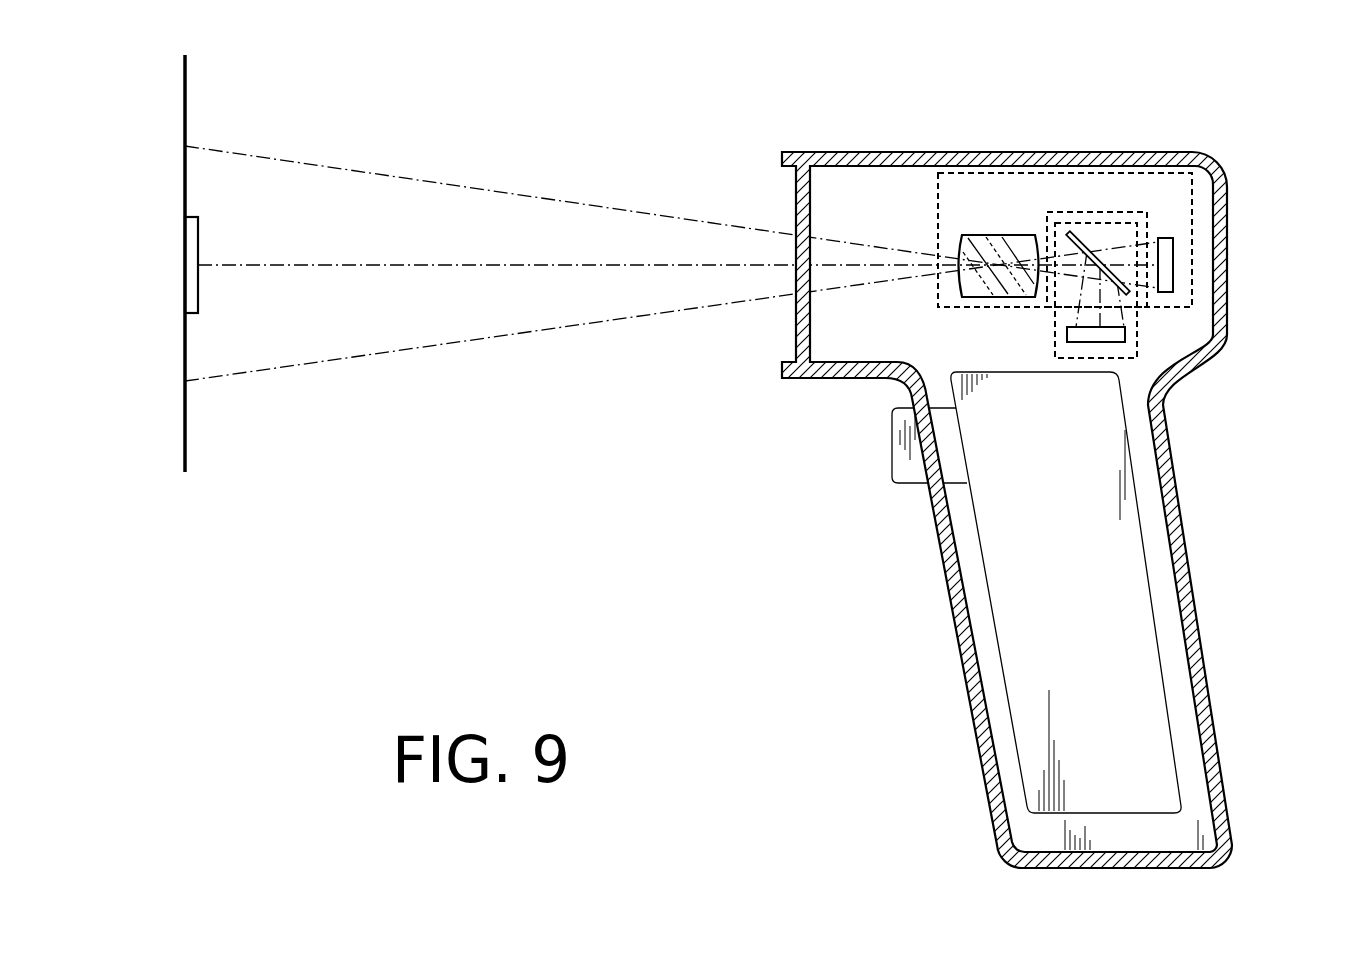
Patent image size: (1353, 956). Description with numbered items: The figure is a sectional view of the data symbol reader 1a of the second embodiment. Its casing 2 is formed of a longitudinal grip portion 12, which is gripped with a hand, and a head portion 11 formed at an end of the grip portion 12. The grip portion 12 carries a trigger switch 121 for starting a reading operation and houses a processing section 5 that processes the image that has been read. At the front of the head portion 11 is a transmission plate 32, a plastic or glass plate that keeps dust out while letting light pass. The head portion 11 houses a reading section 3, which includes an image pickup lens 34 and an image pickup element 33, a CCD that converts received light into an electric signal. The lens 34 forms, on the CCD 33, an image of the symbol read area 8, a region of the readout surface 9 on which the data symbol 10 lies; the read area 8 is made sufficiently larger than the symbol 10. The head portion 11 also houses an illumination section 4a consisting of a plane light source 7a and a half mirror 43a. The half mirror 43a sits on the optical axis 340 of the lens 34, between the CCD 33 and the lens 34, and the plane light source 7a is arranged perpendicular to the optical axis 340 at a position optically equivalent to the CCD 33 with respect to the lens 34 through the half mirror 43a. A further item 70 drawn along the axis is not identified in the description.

The data symbol reader 1a is at (1119, 112).
The casing 2 is at (965, 152).
The reading section 3 is at (938, 208).
The illumination section 4a is at (1046, 358).
The processing section 5 is at (1020, 677).
The plane light source 7a is at (1090, 343).
The symbol read area 8 is at (185, 356).
The readout surface 9 is at (188, 440).
The data symbol 10 is at (198, 231).
The head portion 11 is at (1268, 147).
The grip portion 12 is at (1268, 380).
The transmission plate 32 is at (805, 340).
The image pickup element 33 is at (1182, 213).
The image pickup lens 34 is at (1015, 236).
The half mirror 43a is at (1128, 295).
The optical axis 70 is at (362, 267).
The trigger switch 121 is at (900, 445).
The optical axis 340 is at (465, 232).